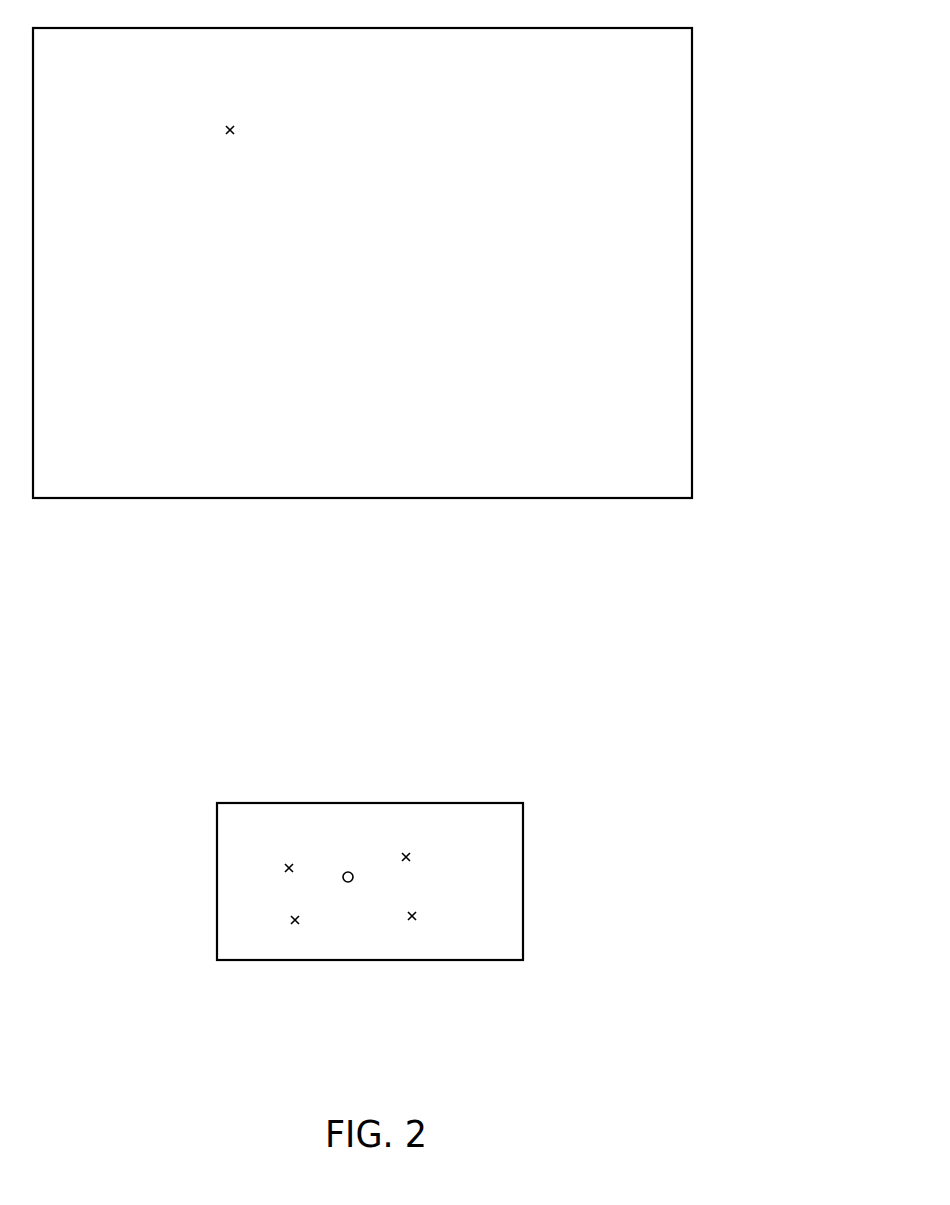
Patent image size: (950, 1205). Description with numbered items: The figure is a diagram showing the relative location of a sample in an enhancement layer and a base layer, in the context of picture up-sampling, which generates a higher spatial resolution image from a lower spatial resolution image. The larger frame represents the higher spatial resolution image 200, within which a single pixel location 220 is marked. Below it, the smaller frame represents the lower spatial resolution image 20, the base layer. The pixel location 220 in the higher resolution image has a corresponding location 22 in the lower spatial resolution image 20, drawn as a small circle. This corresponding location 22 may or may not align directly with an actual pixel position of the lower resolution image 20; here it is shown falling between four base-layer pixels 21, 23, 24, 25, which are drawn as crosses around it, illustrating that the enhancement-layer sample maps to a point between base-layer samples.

The higher spatial resolution image 200 is at (700, 275).
The pixel location 220 is at (234, 153).
The lower spatial resolution image 20 is at (533, 896).
The base-layer pixel 21 is at (282, 846).
The corresponding location 22 is at (336, 860).
The base-layer pixel 23 is at (422, 871).
The base-layer pixel 24 is at (429, 928).
The base-layer pixel 25 is at (280, 903).